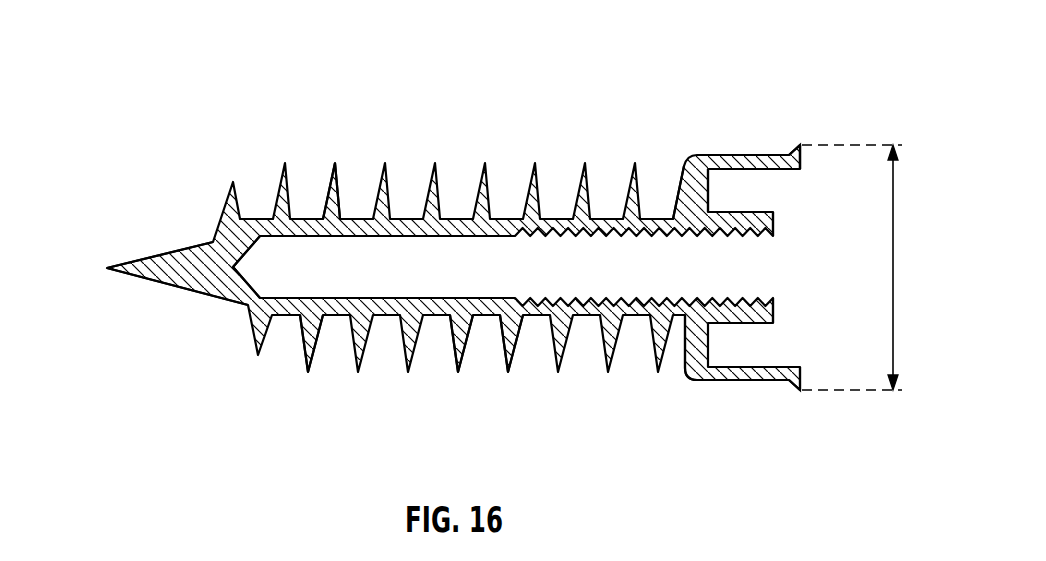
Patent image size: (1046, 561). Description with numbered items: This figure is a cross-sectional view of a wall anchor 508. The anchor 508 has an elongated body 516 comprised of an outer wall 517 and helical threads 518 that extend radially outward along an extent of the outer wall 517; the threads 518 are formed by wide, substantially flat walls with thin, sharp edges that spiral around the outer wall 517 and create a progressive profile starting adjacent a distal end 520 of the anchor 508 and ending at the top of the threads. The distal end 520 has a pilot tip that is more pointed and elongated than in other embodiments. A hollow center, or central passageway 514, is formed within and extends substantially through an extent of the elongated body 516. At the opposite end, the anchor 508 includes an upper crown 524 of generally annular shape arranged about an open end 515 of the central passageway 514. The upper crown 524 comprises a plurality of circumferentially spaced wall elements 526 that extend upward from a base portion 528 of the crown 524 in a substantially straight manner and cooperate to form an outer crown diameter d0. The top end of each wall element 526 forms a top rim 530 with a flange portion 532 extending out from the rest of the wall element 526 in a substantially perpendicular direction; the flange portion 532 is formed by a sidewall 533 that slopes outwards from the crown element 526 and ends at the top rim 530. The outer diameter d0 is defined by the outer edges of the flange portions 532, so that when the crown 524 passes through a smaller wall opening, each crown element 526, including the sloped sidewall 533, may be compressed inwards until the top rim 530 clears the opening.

The wall anchor 508 is at (568, 131).
The central passageway 514 is at (400, 270).
The open end 515 is at (770, 264).
The elongated body 516 is at (484, 380).
The outer wall 517 is at (328, 325).
The helical threads 518 is at (335, 162).
The distal end 520 is at (107, 268).
The upper crown 524 is at (724, 133).
The wall element 526 is at (711, 383).
The base portion 528 is at (675, 373).
The top rim 530 is at (801, 160).
The flange portion 532 is at (798, 392).
The sidewall 533 is at (787, 148).
The outer crown diameter d0 is at (893, 268).